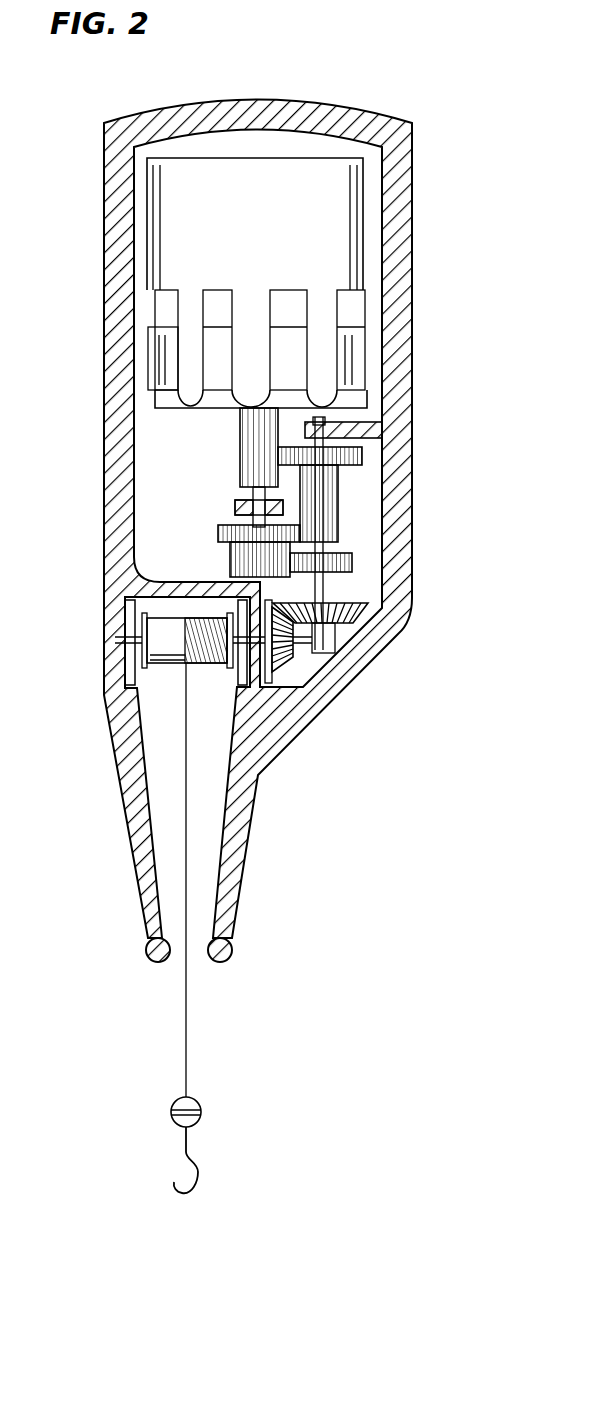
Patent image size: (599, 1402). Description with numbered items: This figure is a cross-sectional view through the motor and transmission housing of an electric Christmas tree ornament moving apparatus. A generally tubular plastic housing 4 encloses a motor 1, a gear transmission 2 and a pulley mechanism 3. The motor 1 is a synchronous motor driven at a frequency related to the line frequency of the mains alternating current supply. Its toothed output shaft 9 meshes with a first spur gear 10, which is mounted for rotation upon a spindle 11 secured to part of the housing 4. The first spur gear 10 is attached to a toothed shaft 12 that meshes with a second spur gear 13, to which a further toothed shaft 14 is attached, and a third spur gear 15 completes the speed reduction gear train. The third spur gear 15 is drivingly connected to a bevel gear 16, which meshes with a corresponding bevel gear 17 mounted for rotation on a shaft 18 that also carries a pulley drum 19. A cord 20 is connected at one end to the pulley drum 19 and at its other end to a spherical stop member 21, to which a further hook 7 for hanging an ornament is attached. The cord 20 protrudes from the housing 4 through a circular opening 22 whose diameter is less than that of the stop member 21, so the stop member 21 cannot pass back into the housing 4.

The motor 1 is at (330, 210).
The gear transmission 2 is at (203, 486).
The pulley mechanism 3 is at (212, 700).
The tubular plastic housing 4 is at (104, 243).
The further hook 7 is at (198, 1180).
The toothed output shaft 9 is at (245, 453).
The first spur gear 10 is at (350, 458).
The spindle 11 is at (405, 422).
The toothed shaft 12 is at (323, 495).
The second spur gear 13 is at (223, 535).
The toothed shaft 14 is at (240, 563).
The third spur gear 15 is at (350, 560).
The bevel gear 16 is at (357, 610).
The bevel gear 17 is at (282, 657).
The shaft 18 is at (118, 641).
The pulley drum 19 is at (155, 630).
The cord 20 is at (187, 1027).
The spherical stop member 21 is at (195, 1108).
The circular opening 22 is at (155, 957).